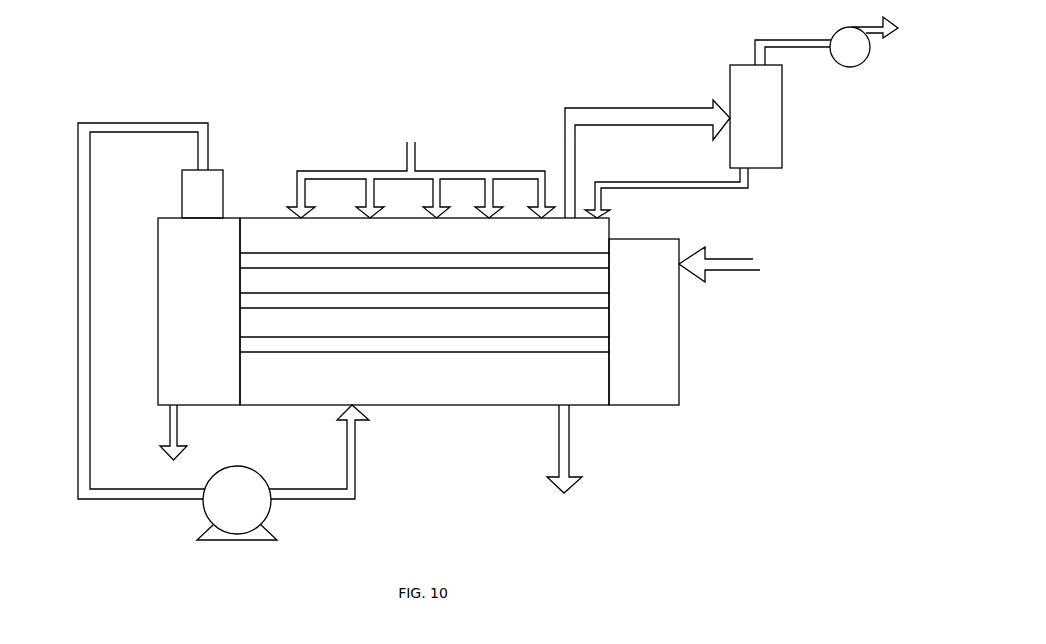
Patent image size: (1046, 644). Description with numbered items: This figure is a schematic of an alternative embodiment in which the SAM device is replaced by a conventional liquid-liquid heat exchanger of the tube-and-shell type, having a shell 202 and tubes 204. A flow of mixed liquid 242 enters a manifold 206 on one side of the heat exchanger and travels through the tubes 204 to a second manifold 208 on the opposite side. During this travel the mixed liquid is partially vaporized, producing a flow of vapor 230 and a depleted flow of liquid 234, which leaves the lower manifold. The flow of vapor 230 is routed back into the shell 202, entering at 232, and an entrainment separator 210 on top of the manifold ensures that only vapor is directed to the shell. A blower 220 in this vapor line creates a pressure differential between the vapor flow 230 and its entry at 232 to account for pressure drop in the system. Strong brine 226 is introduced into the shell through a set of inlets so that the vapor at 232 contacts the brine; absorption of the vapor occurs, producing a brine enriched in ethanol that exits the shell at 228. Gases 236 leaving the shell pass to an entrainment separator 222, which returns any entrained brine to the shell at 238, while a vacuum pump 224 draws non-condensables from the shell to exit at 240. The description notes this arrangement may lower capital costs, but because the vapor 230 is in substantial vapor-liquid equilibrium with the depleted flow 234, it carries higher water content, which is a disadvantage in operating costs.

The shell 202 is at (585, 405).
The tubes 204 is at (590, 310).
The manifold 206 is at (672, 320).
The manifold 208 is at (168, 296).
The entrainment separator 210 is at (223, 180).
The blower 220 is at (214, 513).
The entrainment separator 222 is at (782, 118).
The vacuum pump 224 is at (836, 32).
The strong brine 226 is at (421, 166).
The ethanol-enriched brine exit 228 is at (563, 462).
The flow of vapor 230 is at (78, 380).
The vapor introduced to shell 232 is at (339, 452).
The depleted flow of liquid 234 is at (188, 432).
The gases leaving the shell 236 is at (647, 146).
The entrained brine return 238 is at (666, 193).
The non-condensables exit 240 is at (881, 41).
The flow of mixed liquid 242 is at (738, 264).